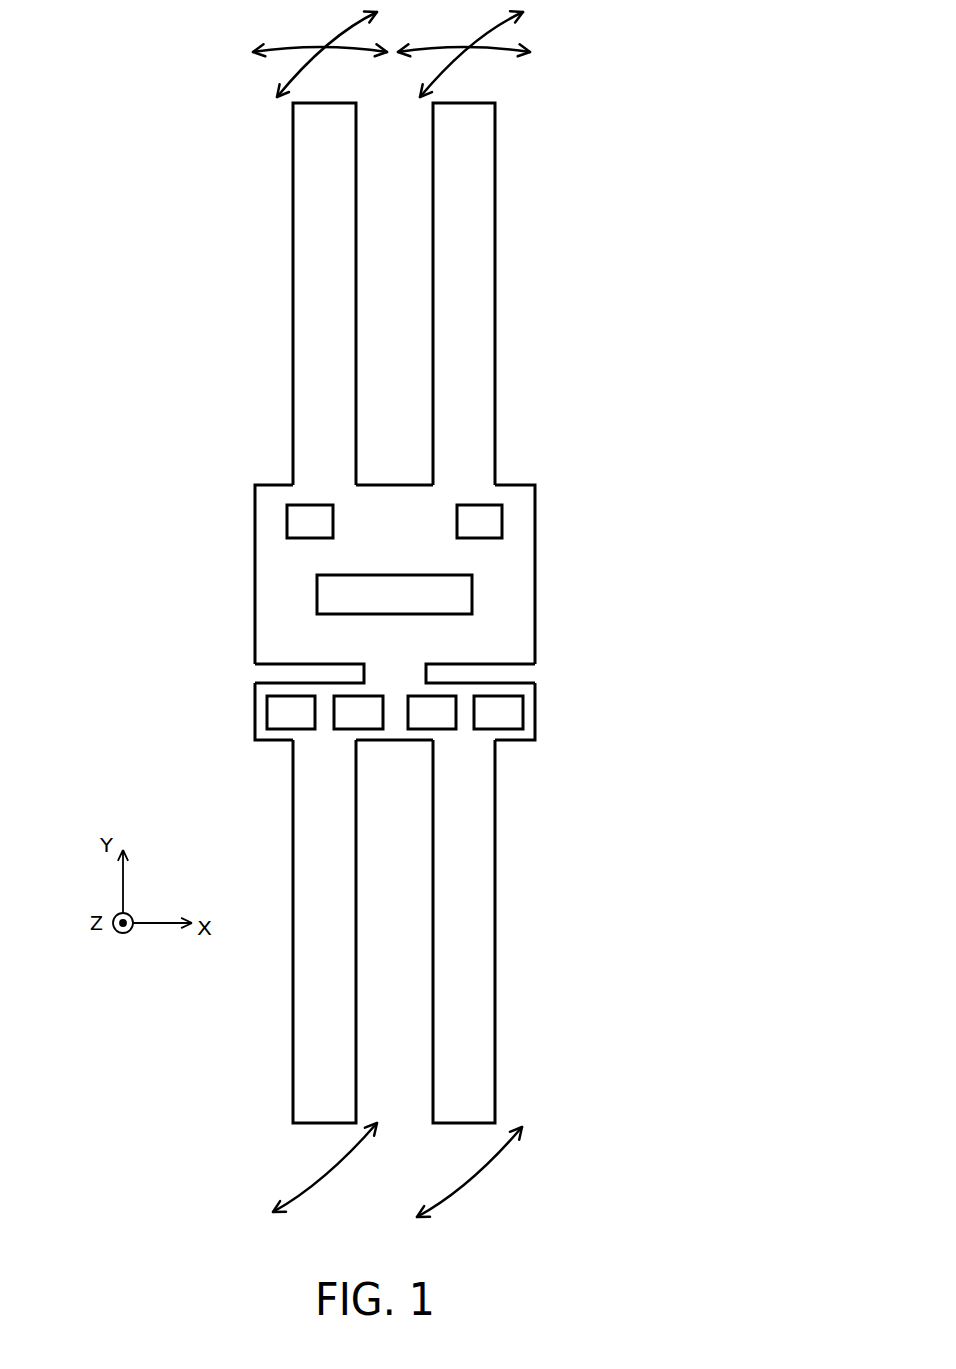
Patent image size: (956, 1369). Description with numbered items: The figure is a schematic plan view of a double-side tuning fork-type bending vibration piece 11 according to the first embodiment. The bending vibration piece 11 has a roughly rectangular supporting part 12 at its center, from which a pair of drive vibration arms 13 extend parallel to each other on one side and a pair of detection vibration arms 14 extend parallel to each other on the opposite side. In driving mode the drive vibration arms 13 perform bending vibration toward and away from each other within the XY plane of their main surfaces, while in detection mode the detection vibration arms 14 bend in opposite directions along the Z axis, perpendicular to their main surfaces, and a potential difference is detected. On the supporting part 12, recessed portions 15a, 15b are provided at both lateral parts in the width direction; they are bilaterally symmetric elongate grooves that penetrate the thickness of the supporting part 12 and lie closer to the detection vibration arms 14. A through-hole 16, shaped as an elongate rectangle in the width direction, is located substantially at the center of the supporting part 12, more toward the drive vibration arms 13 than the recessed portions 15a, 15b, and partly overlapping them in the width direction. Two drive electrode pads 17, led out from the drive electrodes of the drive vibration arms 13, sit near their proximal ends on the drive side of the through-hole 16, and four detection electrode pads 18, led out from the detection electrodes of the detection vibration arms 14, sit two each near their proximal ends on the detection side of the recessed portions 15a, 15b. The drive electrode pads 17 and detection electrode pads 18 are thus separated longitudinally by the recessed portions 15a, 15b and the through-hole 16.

The bending vibration piece 11 is at (402, 613).
The supporting part 12 is at (535, 597).
The drive vibration arms 13 is at (300, 277).
The detection vibration arms 14 is at (298, 1030).
The recessed portion 15a is at (283, 667).
The recessed portion 15b is at (510, 666).
The through-hole 16 is at (331, 577).
The drive electrode pads 17 is at (287, 521).
The detection electrode pads 18 is at (345, 729).